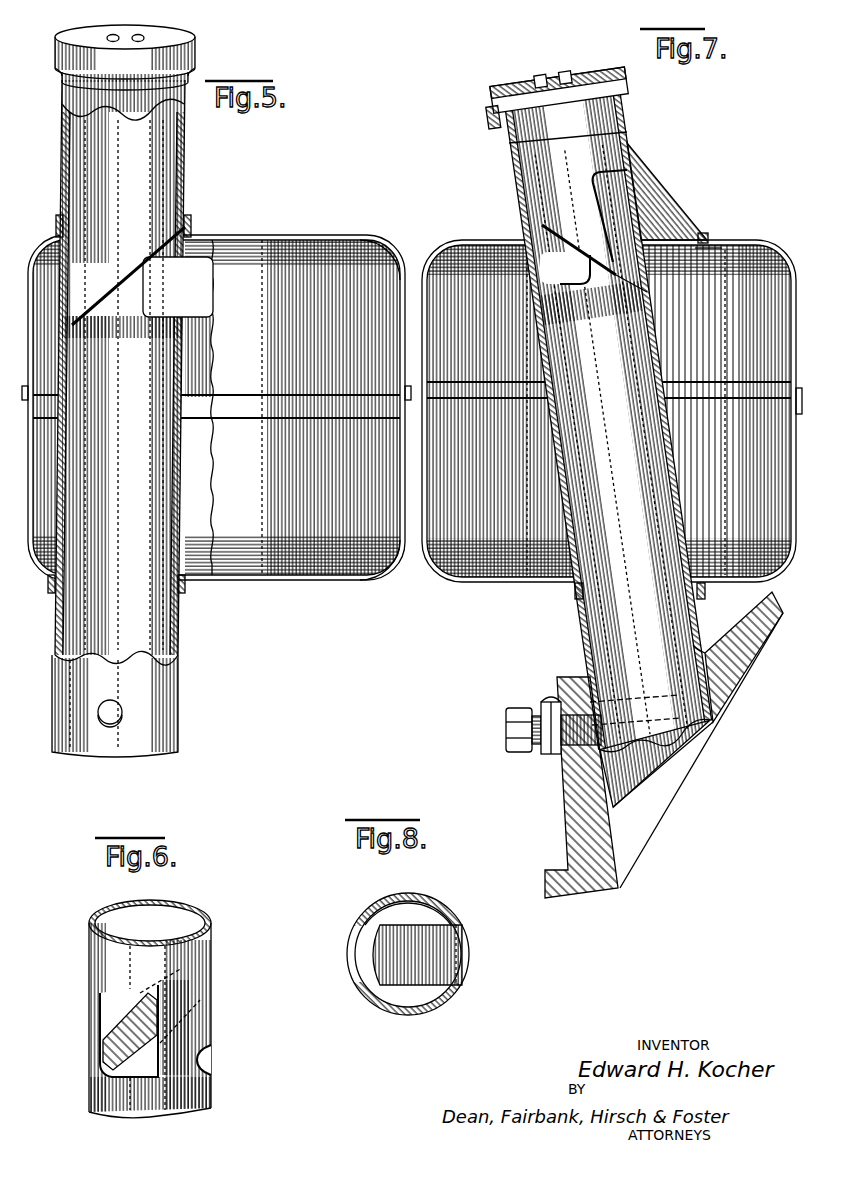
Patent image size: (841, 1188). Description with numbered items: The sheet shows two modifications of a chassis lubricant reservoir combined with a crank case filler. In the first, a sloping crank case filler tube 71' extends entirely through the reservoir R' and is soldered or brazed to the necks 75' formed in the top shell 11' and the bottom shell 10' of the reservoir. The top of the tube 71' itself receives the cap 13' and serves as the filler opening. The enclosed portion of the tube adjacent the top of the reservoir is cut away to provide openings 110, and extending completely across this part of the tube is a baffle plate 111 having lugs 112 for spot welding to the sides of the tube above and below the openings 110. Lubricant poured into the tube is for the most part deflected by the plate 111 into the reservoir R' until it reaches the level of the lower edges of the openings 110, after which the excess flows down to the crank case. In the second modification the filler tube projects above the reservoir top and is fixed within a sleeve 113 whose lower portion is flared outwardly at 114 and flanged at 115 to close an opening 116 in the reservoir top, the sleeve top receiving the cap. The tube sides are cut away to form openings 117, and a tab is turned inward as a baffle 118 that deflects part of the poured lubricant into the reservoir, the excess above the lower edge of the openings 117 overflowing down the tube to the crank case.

In FIG. 5, the cap 13' is at (145, 55).
In FIG. 5, the necks 75' is at (139, 408).
In FIG. 5, the reservoir R' is at (216, 391).
In FIG. 5, the top shell 11' is at (393, 259).
In FIG. 5, the openings 110 is at (62, 243).
In FIG. 6, the openings 110 is at (95, 1009).
In FIG. 5, the baffle plate 111 is at (127, 281).
In FIG. 5, the sloping crank case filler tube 71' is at (146, 418).
In FIG. 6, the sloping crank case filler tube 71' is at (172, 1009).
In FIG. 5, the bottom shell 10' is at (383, 562).
In FIG. 6, the lugs 112 is at (175, 963).
In FIG. 7, the sleeve 113 is at (627, 126).
In FIG. 7, the flared portion 114 is at (668, 197).
In FIG. 7, the opening 116 is at (703, 237).
In FIG. 8, the openings 117 is at (356, 926).
In FIG. 7, the openings 117 is at (572, 254).
In FIG. 7, the flange 115 is at (716, 249).
In FIG. 8, the baffle 118 is at (445, 960).
In FIG. 7, the baffle 118 is at (606, 268).